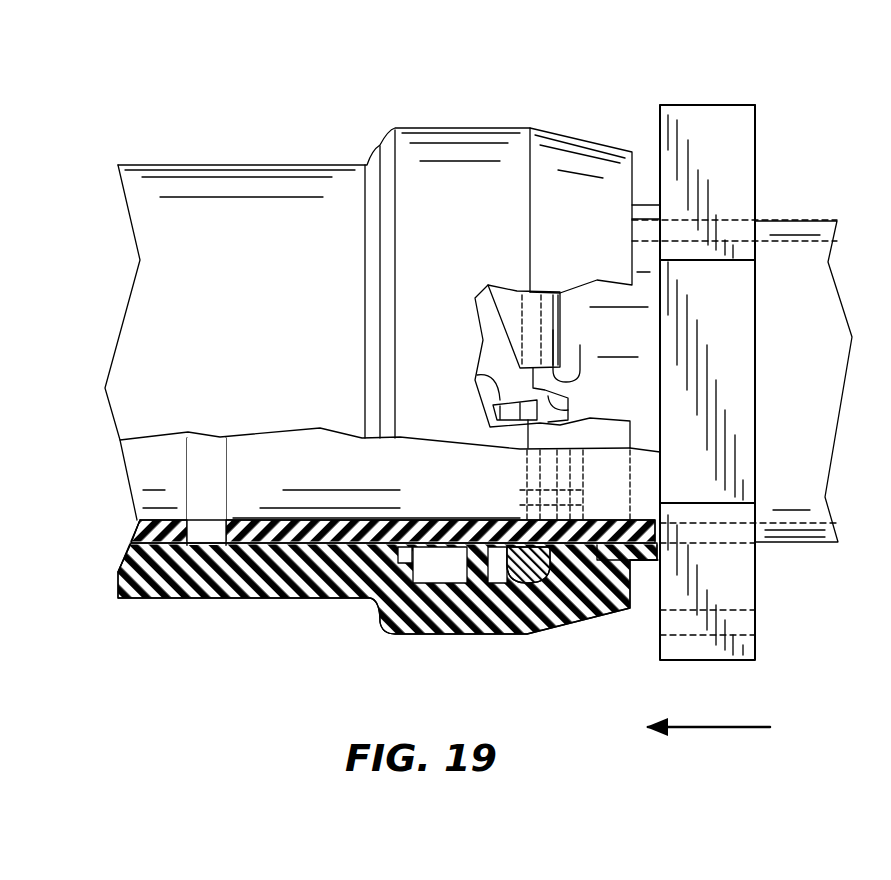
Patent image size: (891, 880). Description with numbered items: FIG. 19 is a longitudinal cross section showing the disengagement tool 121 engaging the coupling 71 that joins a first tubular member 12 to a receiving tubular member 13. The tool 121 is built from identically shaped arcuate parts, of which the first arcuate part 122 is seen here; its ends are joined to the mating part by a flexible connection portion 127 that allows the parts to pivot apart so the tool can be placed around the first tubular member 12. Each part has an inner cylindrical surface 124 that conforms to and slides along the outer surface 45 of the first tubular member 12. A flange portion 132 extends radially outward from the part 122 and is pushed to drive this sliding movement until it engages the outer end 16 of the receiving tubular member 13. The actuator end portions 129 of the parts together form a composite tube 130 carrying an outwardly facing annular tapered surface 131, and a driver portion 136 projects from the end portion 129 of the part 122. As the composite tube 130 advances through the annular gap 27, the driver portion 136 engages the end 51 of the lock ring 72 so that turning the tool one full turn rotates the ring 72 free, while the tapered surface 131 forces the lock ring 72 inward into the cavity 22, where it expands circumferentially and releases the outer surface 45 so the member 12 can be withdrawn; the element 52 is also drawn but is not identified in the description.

The coupling 71 is at (303, 128).
The outer end of the receiving tubular member 16 is at (646, 152).
The outer surface of the first tubular member 45 is at (648, 215).
The disengagement tool 121 is at (714, 100).
The first arcuate part 122 is at (757, 132).
The flange portion 132 is at (660, 113).
The first tubular member 12 is at (784, 216).
The flexible connection portion 127 is at (730, 660).
The annular gap 27 is at (640, 562).
The lock ring 72 is at (514, 324).
The end of the lock ring 51 is at (573, 370).
The spring 52 is at (477, 377).
The driver portion 136 is at (570, 410).
The composite tube 130 is at (597, 517).
The inner cylindrical surface 124 is at (640, 545).
The receiving tubular member 13 is at (246, 608).
The cavity 22 is at (497, 583).
The annular tapered surface 131 is at (565, 555).
The actuator end portion 129 is at (603, 612).